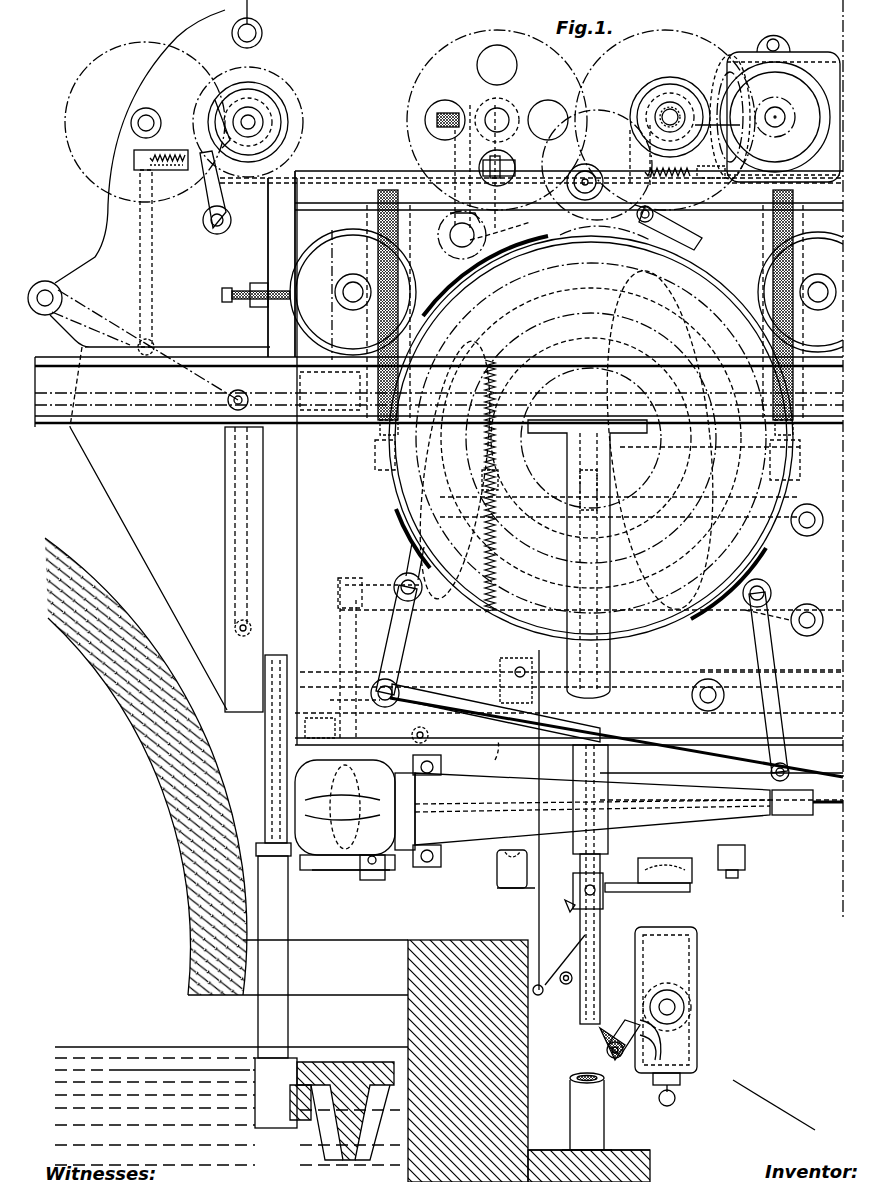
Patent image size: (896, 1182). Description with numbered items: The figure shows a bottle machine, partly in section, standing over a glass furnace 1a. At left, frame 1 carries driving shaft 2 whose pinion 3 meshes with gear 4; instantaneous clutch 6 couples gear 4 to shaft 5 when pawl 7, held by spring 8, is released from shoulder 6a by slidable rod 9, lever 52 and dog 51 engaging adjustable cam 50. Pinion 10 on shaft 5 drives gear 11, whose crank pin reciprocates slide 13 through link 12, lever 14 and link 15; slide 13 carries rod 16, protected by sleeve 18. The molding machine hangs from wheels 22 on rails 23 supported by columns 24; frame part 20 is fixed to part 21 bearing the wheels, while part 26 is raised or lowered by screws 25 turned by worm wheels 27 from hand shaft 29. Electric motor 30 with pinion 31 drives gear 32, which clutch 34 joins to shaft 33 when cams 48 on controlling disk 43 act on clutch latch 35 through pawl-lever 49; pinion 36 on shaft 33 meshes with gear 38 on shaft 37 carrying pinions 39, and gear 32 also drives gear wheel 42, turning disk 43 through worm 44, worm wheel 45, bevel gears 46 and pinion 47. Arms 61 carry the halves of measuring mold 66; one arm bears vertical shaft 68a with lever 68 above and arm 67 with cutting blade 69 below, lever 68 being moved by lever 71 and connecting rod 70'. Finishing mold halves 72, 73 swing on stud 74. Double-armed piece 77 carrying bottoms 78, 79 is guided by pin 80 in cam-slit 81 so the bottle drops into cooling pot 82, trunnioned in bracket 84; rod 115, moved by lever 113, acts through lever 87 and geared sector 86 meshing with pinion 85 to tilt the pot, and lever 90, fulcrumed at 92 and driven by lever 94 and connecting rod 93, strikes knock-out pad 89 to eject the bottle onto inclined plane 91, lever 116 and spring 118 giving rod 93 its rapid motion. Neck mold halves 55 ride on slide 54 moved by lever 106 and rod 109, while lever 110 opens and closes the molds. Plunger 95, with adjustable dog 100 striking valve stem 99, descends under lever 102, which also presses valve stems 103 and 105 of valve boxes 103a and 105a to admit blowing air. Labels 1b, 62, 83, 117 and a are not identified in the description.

The frame 1 is at (435, 591).
The base block 1a is at (415, 1022).
The liquid bath 1b is at (130, 1062).
The shaft 2 is at (244, 12).
The bearing 3 is at (262, 33).
The pulley 4 is at (288, 98).
The shaft 5 is at (256, 122).
The hub 6 is at (272, 134).
The arm 6a is at (225, 130).
The lever 7 is at (215, 192).
The rack 8 is at (185, 172).
The column 9 is at (283, 200).
The gear circle 10 is at (280, 85).
The wheel 11 is at (70, 147).
The rod 12 is at (153, 245).
The column 13 is at (245, 648).
The lever 14 is at (185, 385).
The rod 15 is at (235, 460).
The plunger column 16 is at (268, 798).
The base 18 is at (290, 967).
The guide 20 is at (770, 222).
The pulley hub 21 is at (818, 280).
The pulley 22 is at (338, 295).
The link 23 is at (87, 387).
The tube 24 is at (451, 1111).
The rack 25 is at (795, 378).
The slide 26 is at (800, 462).
The block 27 is at (740, 390).
The shaft 29 is at (318, 425).
The motor housing 30 is at (830, 60).
The motor pulley 31 is at (795, 117).
The belt circle 32 is at (670, 28).
The shaft 33 is at (672, 112).
The pulley 34 is at (650, 82).
The spring 35 is at (642, 160).
The pulley 36 is at (725, 117).
The bearing 37 is at (587, 162).
The gear 38 is at (600, 112).
The roller 39 is at (565, 148).
The disk 42 is at (430, 70).
The pivot 43 is at (795, 505).
The pin 44 is at (492, 108).
The screw 45 is at (430, 120).
The cam 46 is at (452, 214).
The link 47 is at (470, 262).
The drum 48 is at (410, 515).
The lever 49 is at (690, 242).
The cam 50 is at (592, 275).
The pivot 51 is at (635, 216).
The clamp 52 is at (515, 170).
The pivot 54 is at (407, 729).
The bracket 55 is at (319, 727).
The body 61 is at (532, 807).
The block 62 is at (790, 815).
The plate 66 is at (308, 858).
The bracket 67 is at (372, 866).
The collar 68 is at (452, 760).
The collar 68a is at (458, 850).
The bar 69 is at (322, 862).
The rod 70' is at (592, 796).
The link 71 is at (766, 657).
The block 72 is at (652, 873).
The block 73 is at (715, 860).
The foot 74 is at (732, 878).
The pawl 77 is at (580, 905).
The bracket 78 is at (516, 869).
The plate 79 is at (681, 892).
The pin 80 is at (588, 888).
The rod 81 is at (600, 912).
The housing 82 is at (666, 1000).
The pivot 83 is at (675, 1007).
The lever 84 is at (622, 1026).
The bearing 85 is at (668, 985).
The lever 86 is at (665, 1042).
The wedge 87 is at (608, 1052).
The knob 89 is at (675, 1092).
The link 90 is at (570, 948).
The line 91 is at (806, 1118).
The pivot 92 is at (575, 976).
The rod 93 is at (539, 912).
The pivot 94 is at (538, 996).
The rod 95 is at (340, 645).
The pivot 99 is at (368, 672).
The rod 100 is at (360, 670).
The bracket 102 is at (358, 580).
The slide 103 is at (500, 665).
The bar 103a is at (490, 695).
The pivot 105 is at (665, 650).
The lever 105a is at (680, 748).
The link 106 is at (715, 640).
The spring 109 is at (496, 748).
The link 110 is at (400, 642).
The cam 113 is at (688, 500).
The slide bar 115 is at (560, 536).
The cam track 116 is at (512, 360).
The screw 117 is at (520, 475).
The nut 118 is at (485, 488).
The section line a is at (848, 461).